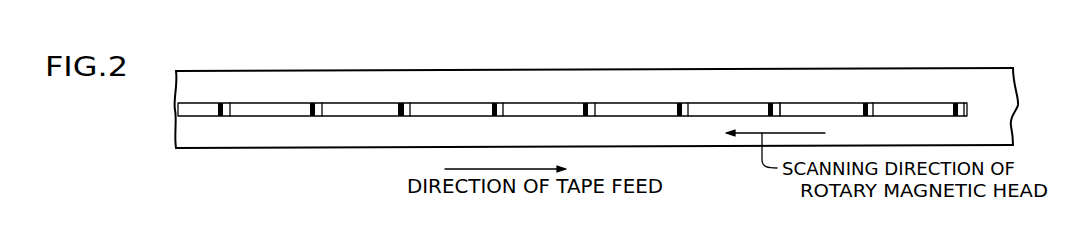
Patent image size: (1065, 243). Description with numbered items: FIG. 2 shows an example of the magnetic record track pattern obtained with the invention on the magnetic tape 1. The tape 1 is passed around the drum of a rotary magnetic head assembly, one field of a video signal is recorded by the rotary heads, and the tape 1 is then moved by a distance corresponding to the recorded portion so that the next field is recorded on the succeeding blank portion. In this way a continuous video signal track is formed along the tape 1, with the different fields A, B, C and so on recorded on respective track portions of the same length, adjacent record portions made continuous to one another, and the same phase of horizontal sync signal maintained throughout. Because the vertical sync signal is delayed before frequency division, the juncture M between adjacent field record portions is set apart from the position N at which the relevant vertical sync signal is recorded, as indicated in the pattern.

The magnetic tape 1 is at (917, 76).
The position of recording of the vertical sync signal N is at (397, 104).
The juncture between adjacent field record portions M is at (783, 107).